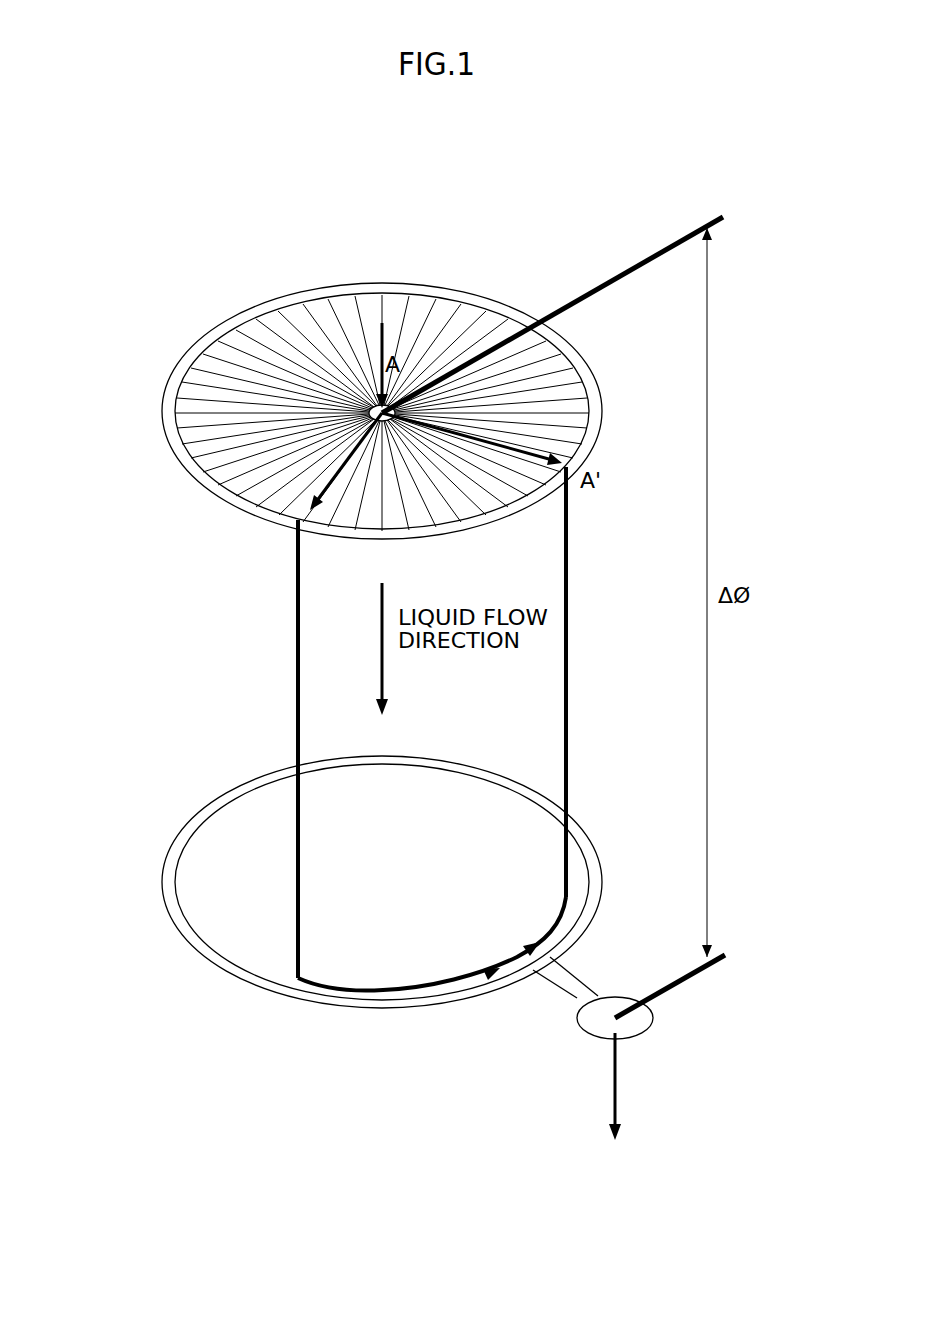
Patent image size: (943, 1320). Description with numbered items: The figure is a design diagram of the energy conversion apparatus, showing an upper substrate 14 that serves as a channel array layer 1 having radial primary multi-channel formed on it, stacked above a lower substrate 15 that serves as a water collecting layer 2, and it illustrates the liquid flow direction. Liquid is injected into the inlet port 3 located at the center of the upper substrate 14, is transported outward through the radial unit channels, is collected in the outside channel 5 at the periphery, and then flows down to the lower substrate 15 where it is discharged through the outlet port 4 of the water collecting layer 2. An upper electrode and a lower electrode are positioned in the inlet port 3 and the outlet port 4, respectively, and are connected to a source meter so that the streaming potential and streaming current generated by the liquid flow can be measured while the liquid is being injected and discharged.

The channel array layer 1 is at (302, 335).
The water collecting layer 2 is at (247, 936).
The inlet port 3 is at (363, 407).
The outlet port 4 is at (642, 1030).
The outside channel 5 is at (227, 787).
The upper substrate 14 is at (602, 298).
The lower substrate 15 is at (719, 999).